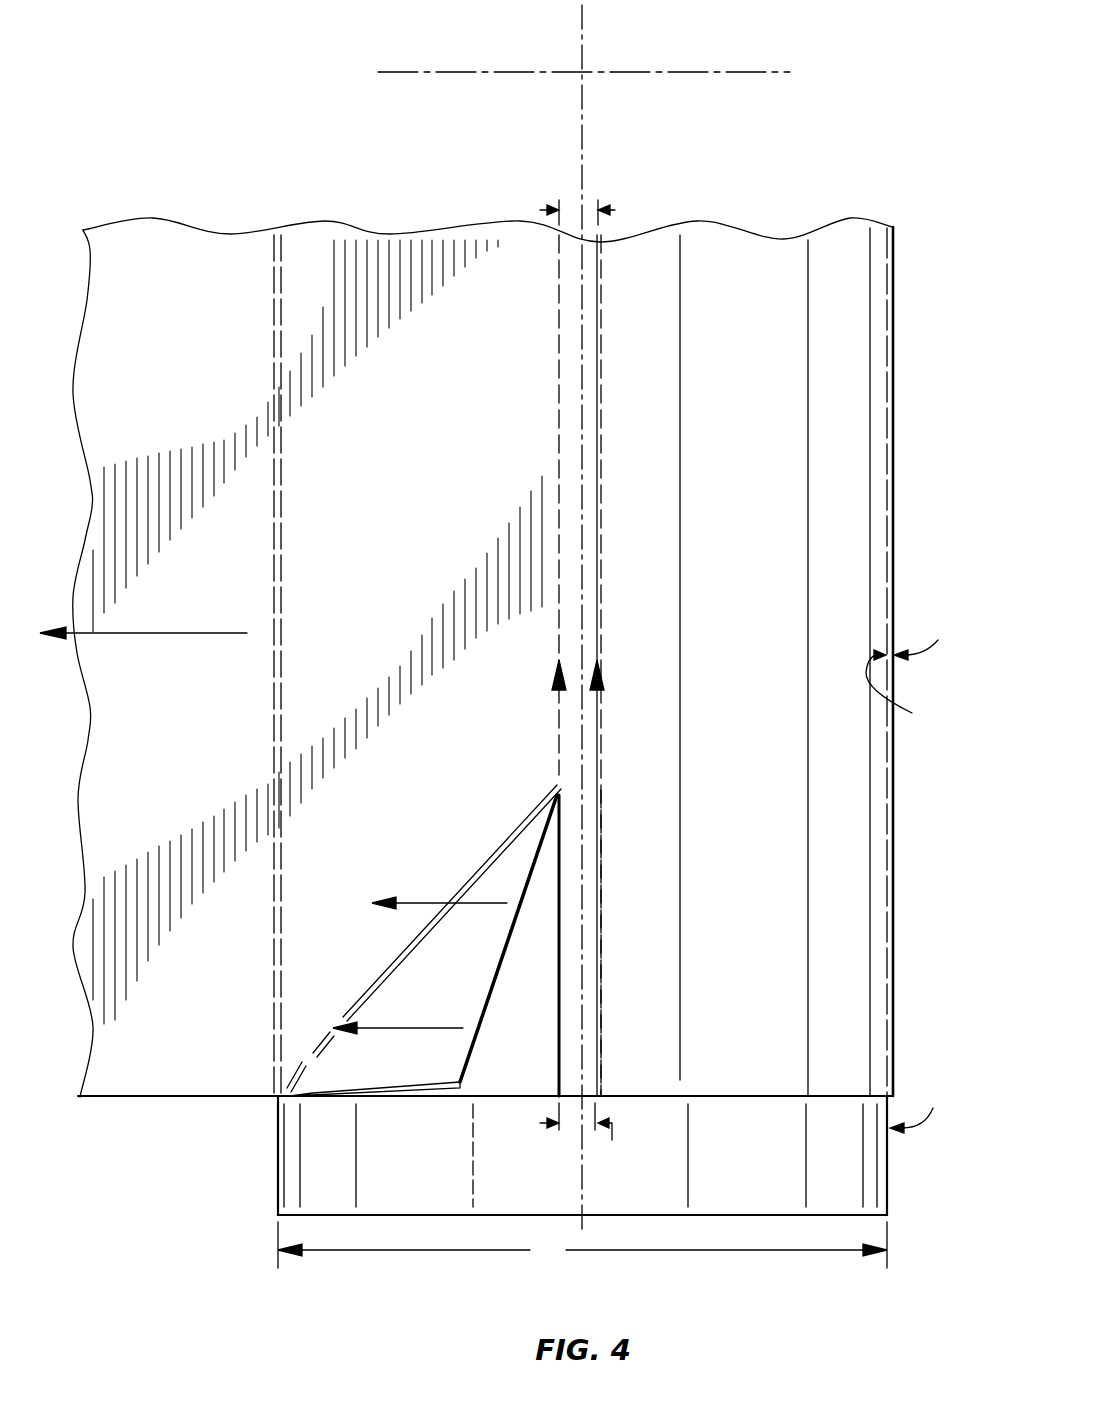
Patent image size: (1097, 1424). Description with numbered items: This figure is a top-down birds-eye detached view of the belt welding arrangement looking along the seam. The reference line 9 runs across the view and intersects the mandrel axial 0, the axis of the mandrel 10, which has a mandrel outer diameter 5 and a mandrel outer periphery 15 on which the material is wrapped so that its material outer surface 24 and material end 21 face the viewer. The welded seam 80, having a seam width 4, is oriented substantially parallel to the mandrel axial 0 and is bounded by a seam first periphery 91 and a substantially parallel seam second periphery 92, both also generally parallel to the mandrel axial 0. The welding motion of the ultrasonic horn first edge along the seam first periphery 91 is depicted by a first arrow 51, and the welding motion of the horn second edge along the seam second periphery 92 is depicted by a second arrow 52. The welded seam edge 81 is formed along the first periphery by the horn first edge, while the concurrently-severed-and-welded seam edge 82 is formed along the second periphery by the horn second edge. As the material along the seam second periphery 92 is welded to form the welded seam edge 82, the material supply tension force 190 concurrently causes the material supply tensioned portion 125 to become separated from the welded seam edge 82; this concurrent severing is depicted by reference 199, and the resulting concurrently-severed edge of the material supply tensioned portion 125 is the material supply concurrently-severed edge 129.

The mandrel axial 0 is at (580, 45).
The reference line 9 is at (765, 72).
The seam width 4 is at (603, 210).
The material supply tensioned portion 125 is at (210, 252).
The material end 21 is at (600, 333).
The seam first periphery 91 is at (600, 397).
The seam second periphery 92 is at (557, 412).
The tension force 190 is at (140, 633).
The material outer surface 24 is at (925, 661).
The mandrel outer periphery 15 is at (911, 932).
The ultrasonic welding horn second edge seam welding motion direction 52 is at (556, 690).
The ultrasonic welding horn first edge seam welding motion direction 51 is at (600, 690).
The concurrent severing of the material supply tensioned portion from the welded sea 199 is at (423, 903).
The material supply concurrently-severed edge 129 is at (502, 963).
The welded seam edge 81 is at (600, 945).
The concurrently-severed-and-welded seam edge 82 is at (556, 1038).
The welded seam 80 is at (587, 1141).
The mandrel 10 is at (292, 1147).
The mandrel outer diameter 5 is at (582, 1245).